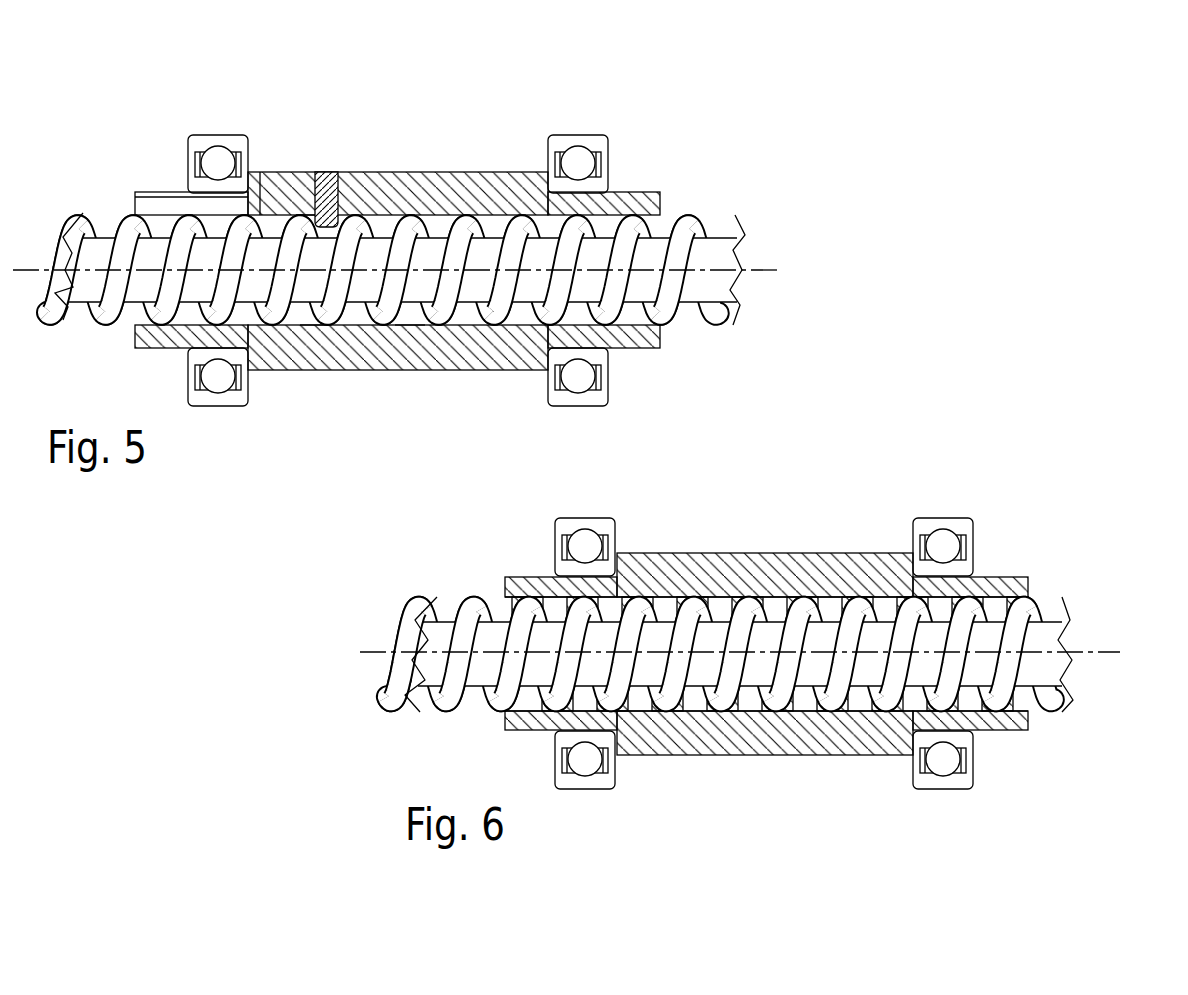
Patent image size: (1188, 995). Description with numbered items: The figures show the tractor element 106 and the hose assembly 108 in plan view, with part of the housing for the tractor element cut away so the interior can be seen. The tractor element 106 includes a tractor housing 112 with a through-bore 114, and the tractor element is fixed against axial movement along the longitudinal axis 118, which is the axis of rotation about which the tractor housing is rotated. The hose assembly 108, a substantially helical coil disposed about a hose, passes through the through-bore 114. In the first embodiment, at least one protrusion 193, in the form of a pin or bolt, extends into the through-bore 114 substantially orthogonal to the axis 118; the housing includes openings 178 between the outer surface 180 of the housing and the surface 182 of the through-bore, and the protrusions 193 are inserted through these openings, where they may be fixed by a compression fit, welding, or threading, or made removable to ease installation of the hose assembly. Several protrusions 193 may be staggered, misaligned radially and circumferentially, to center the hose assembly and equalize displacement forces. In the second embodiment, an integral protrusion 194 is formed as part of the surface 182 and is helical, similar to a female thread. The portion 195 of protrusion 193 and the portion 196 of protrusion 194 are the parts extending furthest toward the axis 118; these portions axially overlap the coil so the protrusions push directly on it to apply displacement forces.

In FIG. 5, the tractor element 106 is at (397, 251).
In FIG. 6, the tractor element 106 is at (766, 650).
In FIG. 5, the hose assembly 108 is at (390, 250).
In FIG. 6, the hose assembly 108 is at (407, 729).
In FIG. 5, the tractor housing 112 is at (492, 172).
In FIG. 6, the tractor housing 112 is at (766, 650).
In FIG. 5, the through-bore 114 is at (313, 327).
In FIG. 5, the longitudinal axis 118 is at (762, 270).
In FIG. 6, the longitudinal axis 118 is at (1106, 652).
In FIG. 5, the opening 178 is at (340, 180).
In FIG. 5, the outer surface 180 is at (280, 372).
In FIG. 5, the surface of the through-bore 182 is at (410, 318).
In FIG. 6, the surface of the through-bore 182 is at (770, 703).
In FIG. 5, the protrusion 193 is at (326, 172).
In FIG. 6, the integral protrusion 194 is at (716, 596).
In FIG. 5, the portion of protrusion 193 195 is at (313, 213).
In FIG. 6, the portion of protrusion 194 196 is at (789, 607).